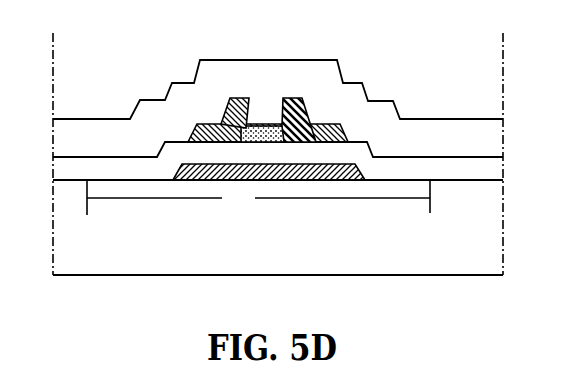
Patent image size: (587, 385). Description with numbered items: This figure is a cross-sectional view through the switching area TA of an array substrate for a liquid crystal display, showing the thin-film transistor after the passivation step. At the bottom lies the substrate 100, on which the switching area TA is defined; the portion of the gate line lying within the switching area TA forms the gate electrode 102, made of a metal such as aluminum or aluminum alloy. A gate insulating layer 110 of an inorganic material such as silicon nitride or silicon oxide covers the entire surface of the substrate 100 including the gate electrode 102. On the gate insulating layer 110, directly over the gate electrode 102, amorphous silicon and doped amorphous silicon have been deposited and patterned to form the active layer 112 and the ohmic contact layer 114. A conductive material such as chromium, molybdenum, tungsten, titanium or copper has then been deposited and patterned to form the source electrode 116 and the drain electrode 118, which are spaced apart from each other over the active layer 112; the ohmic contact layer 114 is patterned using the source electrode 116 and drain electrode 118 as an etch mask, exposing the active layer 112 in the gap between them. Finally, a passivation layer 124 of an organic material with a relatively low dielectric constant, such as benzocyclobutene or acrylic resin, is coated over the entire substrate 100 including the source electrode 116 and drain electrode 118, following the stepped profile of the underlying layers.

The substrate 100 is at (101, 267).
The gate electrode 102 is at (328, 180).
The gate insulating layer 110 is at (83, 155).
The active layer 112 is at (268, 120).
The ohmic contact layer 114 is at (293, 98).
The source electrode 116 is at (238, 98).
The drain electrode 118 is at (333, 120).
The passivation layer 124 is at (147, 100).
The switching area TA is at (258, 197).